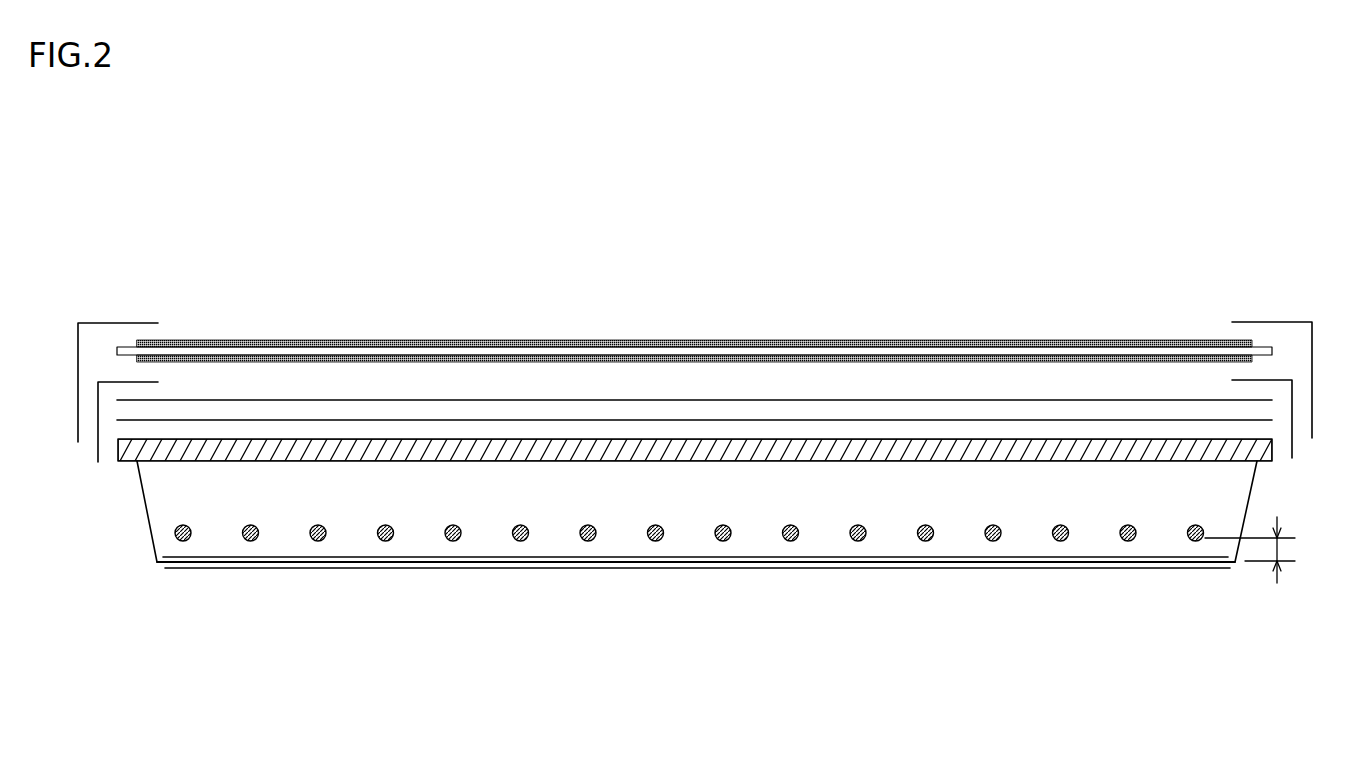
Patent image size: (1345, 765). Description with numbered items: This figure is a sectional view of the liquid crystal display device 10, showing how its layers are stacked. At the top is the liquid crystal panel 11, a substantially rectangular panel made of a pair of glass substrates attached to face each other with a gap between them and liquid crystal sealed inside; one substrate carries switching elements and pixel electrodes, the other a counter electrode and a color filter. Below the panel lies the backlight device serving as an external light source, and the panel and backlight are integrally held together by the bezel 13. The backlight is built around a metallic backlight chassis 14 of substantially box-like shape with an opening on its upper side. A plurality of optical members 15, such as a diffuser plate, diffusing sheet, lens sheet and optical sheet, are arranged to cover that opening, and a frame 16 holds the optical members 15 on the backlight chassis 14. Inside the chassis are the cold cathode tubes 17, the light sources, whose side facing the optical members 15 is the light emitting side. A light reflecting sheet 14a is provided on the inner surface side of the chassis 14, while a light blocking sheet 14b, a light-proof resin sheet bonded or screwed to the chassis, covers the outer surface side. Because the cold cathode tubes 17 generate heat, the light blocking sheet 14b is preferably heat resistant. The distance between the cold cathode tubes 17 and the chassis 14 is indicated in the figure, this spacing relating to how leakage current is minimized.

The liquid crystal display device 10 is at (532, 283).
The liquid crystal panel 11 is at (405, 340).
The bezel 13 is at (125, 322).
The backlight chassis 14 is at (667, 568).
The light reflecting sheet 14a is at (1018, 551).
The light blocking sheet 14b is at (1147, 569).
The optical members 15 is at (675, 438).
The frame 16 is at (108, 381).
The cold cathode tubes 17 is at (385, 523).